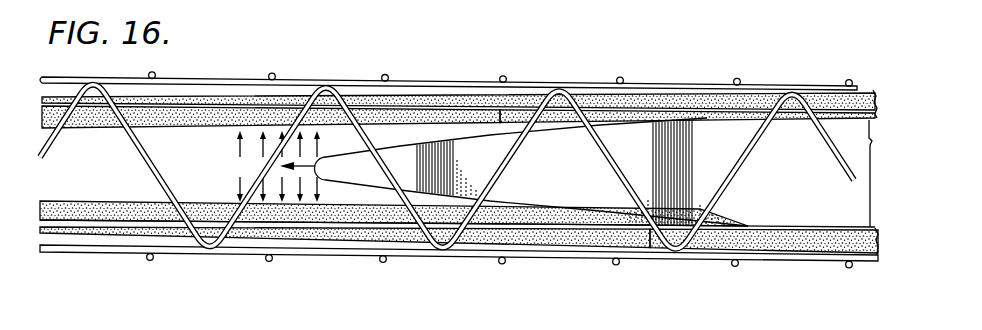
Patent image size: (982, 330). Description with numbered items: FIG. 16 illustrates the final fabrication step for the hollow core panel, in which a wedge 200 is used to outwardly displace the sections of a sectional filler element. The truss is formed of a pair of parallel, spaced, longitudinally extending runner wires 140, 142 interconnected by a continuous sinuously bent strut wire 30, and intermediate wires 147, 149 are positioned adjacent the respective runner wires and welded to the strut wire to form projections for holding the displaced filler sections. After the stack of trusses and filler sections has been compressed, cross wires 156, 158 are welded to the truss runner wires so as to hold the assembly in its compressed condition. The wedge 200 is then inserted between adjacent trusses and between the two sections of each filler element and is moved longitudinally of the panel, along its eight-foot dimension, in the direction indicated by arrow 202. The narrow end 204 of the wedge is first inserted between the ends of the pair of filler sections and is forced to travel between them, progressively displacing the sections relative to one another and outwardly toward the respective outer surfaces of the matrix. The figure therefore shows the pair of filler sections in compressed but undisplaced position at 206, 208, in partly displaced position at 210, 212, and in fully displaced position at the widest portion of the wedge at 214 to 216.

The strut wire 30 is at (505, 169).
The runner wire 140 is at (416, 57).
The runner wire 142 is at (312, 256).
The intermediate wire 147 is at (206, 112).
The intermediate wire 149 is at (200, 226).
The cross wire 156 is at (271, 73).
The cross wire 158 is at (269, 261).
The wedge 200 is at (838, 190).
The arrow 202 is at (305, 165).
The narrow end of the wedge 204 is at (323, 181).
The filler section in compressed undisplaced position 206 is at (84, 128).
The filler section in compressed undisplaced position 208 is at (75, 201).
The filler section in partly displaced position 210 is at (473, 107).
The filler section in partly displaced position 212 is at (536, 248).
The filler section in fully displaced position 214 is at (695, 100).
The filler section in fully displaced position 216 is at (758, 244).